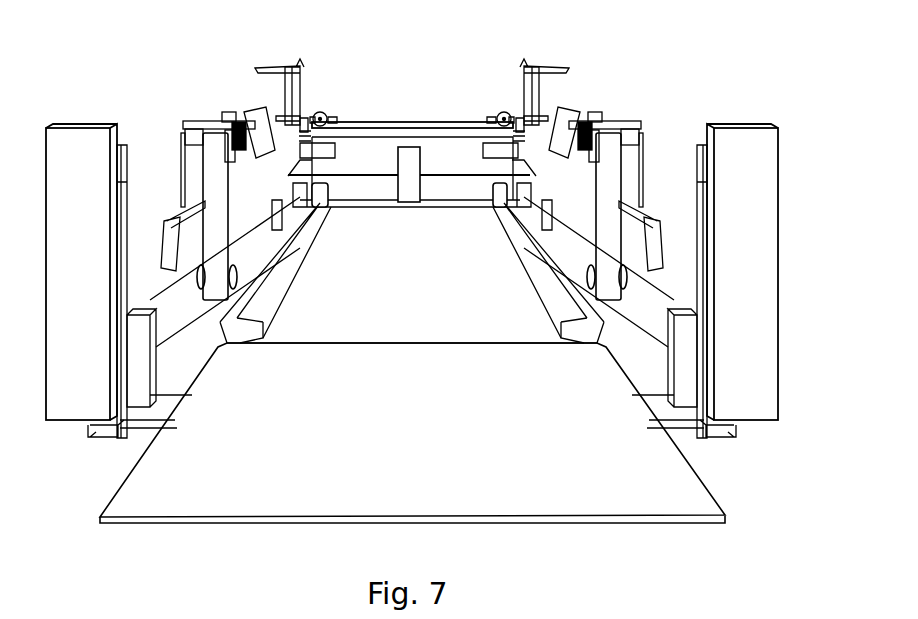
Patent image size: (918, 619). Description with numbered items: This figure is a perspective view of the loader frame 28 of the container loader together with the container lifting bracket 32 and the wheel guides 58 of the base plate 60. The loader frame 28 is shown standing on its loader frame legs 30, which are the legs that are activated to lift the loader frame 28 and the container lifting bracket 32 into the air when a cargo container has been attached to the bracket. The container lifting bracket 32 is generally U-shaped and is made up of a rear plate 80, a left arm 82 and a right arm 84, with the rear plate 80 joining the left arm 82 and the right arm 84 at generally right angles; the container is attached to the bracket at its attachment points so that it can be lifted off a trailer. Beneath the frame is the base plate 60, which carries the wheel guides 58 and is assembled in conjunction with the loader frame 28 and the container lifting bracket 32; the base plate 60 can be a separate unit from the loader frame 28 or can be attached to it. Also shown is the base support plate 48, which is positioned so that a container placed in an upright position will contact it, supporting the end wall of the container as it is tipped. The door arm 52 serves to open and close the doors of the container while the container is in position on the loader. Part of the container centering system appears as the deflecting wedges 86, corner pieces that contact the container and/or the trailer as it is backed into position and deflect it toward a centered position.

The loader frame 28 is at (175, 220).
The loader frame legs 30 is at (83, 136).
The container lifting bracket 32 is at (290, 278).
The base support plate 48 is at (676, 474).
The door arm 52 is at (299, 69).
The wheel guides 58 is at (287, 238).
The base plate 60 is at (423, 385).
The rear plate 80 is at (450, 136).
The left arm 82 is at (240, 218).
The right arm 84 is at (583, 215).
The deflecting wedges 86 is at (306, 113).